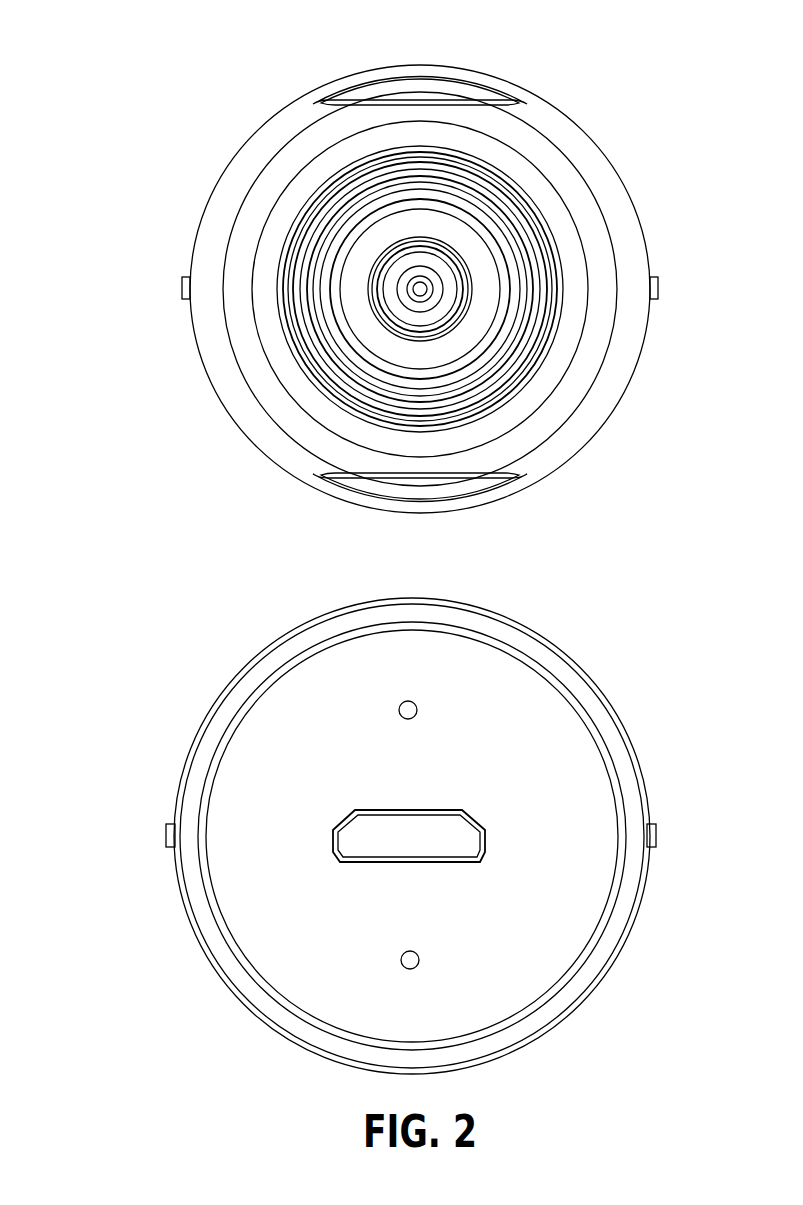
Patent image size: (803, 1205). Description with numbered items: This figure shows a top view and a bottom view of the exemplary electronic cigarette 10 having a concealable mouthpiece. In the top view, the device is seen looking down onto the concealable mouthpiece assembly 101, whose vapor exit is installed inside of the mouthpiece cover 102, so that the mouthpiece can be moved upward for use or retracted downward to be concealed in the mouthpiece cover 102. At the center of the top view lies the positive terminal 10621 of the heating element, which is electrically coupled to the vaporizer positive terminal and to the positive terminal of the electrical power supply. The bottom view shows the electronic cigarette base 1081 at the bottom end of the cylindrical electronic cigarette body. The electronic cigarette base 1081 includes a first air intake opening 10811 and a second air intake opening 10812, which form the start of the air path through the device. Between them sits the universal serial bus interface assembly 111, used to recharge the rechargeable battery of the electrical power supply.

The electronic cigarette 10 is at (78, 105).
The concealable mouthpiece assembly 101 is at (258, 300).
The mouthpiece cover 102 is at (204, 250).
The positive terminal 10621 is at (405, 290).
The electronic cigarette base 1081 is at (240, 803).
The first air intake opening 10811 is at (400, 708).
The second air intake opening 10812 is at (400, 962).
The universal serial bus (USB) interface assembly 111 is at (448, 822).